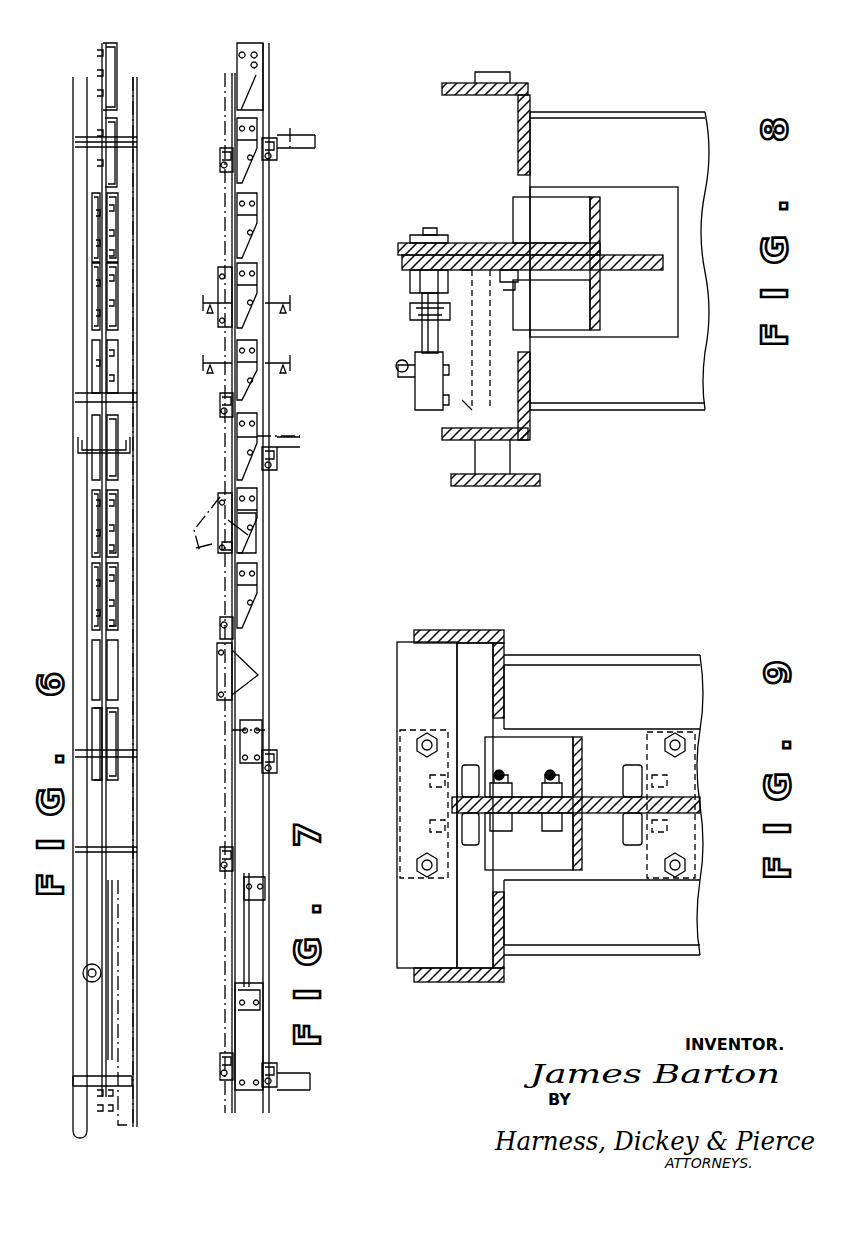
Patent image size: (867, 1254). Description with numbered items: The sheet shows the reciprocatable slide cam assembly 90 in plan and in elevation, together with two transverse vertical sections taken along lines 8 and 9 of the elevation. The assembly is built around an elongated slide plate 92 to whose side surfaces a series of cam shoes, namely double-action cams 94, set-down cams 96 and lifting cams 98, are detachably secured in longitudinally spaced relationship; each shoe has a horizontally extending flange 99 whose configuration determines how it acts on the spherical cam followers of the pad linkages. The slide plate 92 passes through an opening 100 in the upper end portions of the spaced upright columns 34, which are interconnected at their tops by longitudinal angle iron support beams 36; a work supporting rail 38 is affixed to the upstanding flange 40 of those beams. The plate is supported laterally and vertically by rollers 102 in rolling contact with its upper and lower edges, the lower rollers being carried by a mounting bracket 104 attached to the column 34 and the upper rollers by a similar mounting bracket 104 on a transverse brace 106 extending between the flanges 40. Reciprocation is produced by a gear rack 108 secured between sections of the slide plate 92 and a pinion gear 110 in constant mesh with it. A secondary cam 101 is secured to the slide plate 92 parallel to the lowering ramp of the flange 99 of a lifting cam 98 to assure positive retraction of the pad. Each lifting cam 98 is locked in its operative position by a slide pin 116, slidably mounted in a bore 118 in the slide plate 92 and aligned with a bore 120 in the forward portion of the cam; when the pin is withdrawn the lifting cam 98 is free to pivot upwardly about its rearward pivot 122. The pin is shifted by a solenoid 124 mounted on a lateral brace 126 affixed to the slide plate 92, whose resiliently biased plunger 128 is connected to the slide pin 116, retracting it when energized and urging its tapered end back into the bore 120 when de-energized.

In FIG. 6, the upright columns 34 is at (136, 736).
In FIG. 7, the upright columns 34 is at (296, 135).
In FIG. 8, the upright columns 34 is at (552, 138).
In FIG. 9, the upright columns 34 is at (595, 668).
In FIG. 6, the longitudinal angle iron support beams 36 is at (76, 207).
In FIG. 7, the longitudinal angle iron support beams 36 is at (233, 593).
In FIG. 8, the longitudinal angle iron support beams 36 is at (470, 83).
In FIG. 9, the longitudinal angle iron support beams 36 is at (480, 630).
In FIG. 8, the work supporting rail 38 is at (492, 487).
In FIG. 9, the upstanding flange 40 is at (405, 680).
In FIG. 6, the reciprocatable slide cam assembly 90 is at (90, 418).
In FIG. 8, the reciprocatable slide cam assembly 90 is at (661, 288).
In FIG. 9, the reciprocatable slide cam assembly 90 is at (604, 848).
In FIG. 6, the slide plate 92 is at (107, 820).
In FIG. 7, the slide plate 92 is at (247, 841).
In FIG. 8, the slide plate 92 is at (620, 270).
In FIG. 9, the slide plate 92 is at (612, 813).
In FIG. 6, the double-action cams 94 is at (107, 593).
In FIG. 7, the double-action cams 94 is at (255, 548).
In FIG. 8, the double-action cams 94 is at (548, 310).
In FIG. 9, the double-action cams 94 is at (523, 755).
In FIG. 6, the set-down cams 96 is at (100, 723).
In FIG. 7, the set-down cams 96 is at (258, 720).
In FIG. 6, the lifting cams 98 is at (96, 564).
In FIG. 7, the lifting cams 98 is at (220, 288).
In FIG. 8, the lifting cams 98 is at (560, 208).
In FIG. 8, the flanges 99 is at (593, 200).
In FIG. 9, the flanges 99 is at (576, 752).
In FIG. 8, the opening 100 is at (617, 186).
In FIG. 9, the opening 100 is at (610, 732).
In FIG. 7, the secondary cam 101 is at (266, 268).
In FIG. 9, the rollers 102 is at (469, 765).
In FIG. 7, the mounting bracket 104 is at (221, 160).
In FIG. 9, the mounting bracket 104 is at (400, 748).
In FIG. 6, the transverse brace 106 is at (113, 868).
In FIG. 9, the transverse brace 106 is at (410, 690).
In FIG. 6, the gear rack 108 is at (109, 977).
In FIG. 7, the gear rack 108 is at (246, 945).
In FIG. 6, the pinion gear 110 is at (83, 973).
In FIG. 8, the slide pin 116 is at (432, 236).
In FIG. 8, the bore 118 is at (400, 262).
In FIG. 7, the bore 120 is at (194, 530).
In FIG. 8, the bore 120 is at (422, 232).
In FIG. 7, the rearward pivot 122 is at (222, 497).
In FIG. 8, the solenoid 124 is at (416, 382).
In FIG. 8, the lateral brace 126 is at (482, 322).
In FIG. 8, the plunger 128 is at (422, 322).
In FIG. 7, the section line 8— 8 is at (242, 368).
In FIG. 7, the section line 9— 9 is at (242, 305).